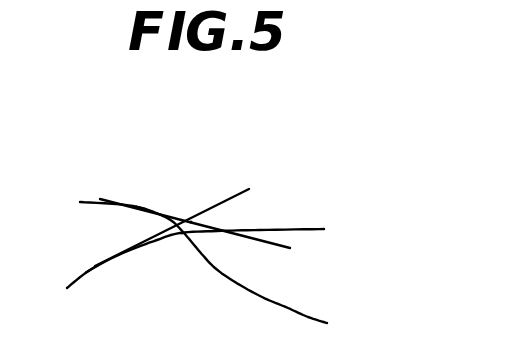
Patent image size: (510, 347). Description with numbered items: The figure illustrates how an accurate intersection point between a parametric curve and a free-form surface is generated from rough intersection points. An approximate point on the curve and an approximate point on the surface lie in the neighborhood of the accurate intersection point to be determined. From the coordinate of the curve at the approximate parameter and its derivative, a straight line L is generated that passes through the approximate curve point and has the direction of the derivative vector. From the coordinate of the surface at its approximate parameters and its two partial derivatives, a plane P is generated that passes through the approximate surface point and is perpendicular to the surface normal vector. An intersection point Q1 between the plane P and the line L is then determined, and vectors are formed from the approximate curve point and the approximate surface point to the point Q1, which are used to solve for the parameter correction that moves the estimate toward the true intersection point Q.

The straight line L is at (204, 233).
The plane P is at (179, 213).
The intersection point between plane and line Q1 is at (191, 222).
The intersection point of curve P(t) with surface S Q is at (182, 236).